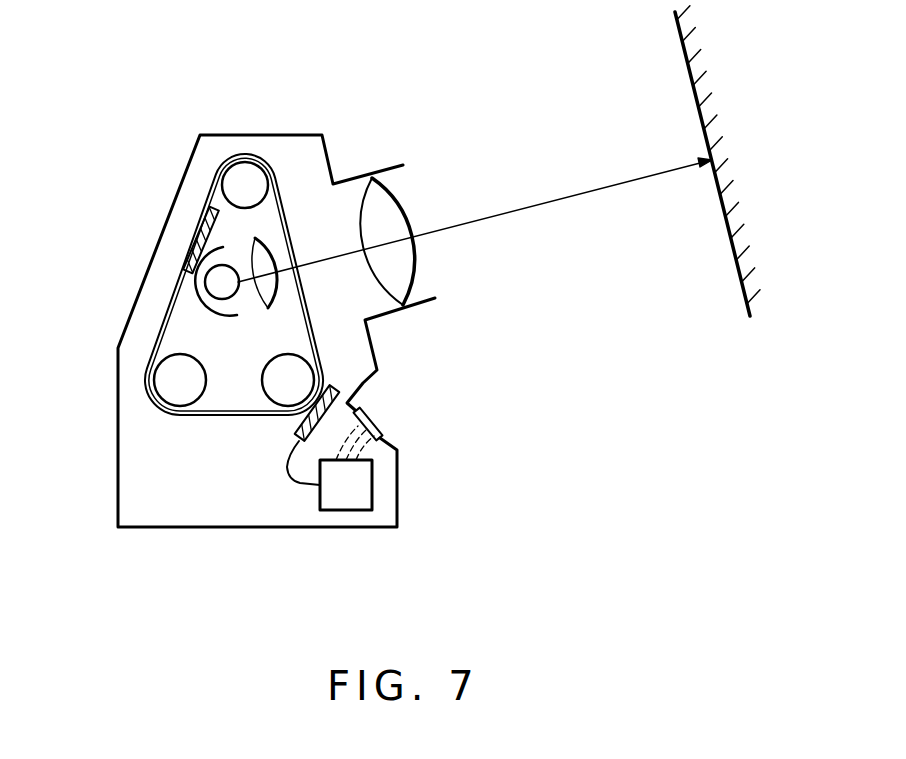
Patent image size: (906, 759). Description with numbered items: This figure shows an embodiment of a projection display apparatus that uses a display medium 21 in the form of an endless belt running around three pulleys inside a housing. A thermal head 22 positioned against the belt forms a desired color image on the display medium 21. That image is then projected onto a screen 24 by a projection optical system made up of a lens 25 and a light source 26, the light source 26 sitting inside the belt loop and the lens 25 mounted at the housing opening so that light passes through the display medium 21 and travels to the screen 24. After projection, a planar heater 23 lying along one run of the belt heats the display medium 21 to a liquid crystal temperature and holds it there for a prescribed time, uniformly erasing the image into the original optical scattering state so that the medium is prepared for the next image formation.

The display medium 21 is at (290, 192).
The thermal head 22 is at (338, 390).
The planar heater 23 is at (200, 230).
The screen 24 is at (737, 280).
The lens 25 is at (280, 302).
The light source 26 is at (215, 304).